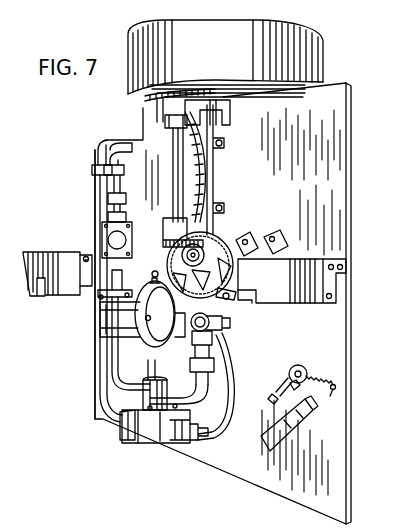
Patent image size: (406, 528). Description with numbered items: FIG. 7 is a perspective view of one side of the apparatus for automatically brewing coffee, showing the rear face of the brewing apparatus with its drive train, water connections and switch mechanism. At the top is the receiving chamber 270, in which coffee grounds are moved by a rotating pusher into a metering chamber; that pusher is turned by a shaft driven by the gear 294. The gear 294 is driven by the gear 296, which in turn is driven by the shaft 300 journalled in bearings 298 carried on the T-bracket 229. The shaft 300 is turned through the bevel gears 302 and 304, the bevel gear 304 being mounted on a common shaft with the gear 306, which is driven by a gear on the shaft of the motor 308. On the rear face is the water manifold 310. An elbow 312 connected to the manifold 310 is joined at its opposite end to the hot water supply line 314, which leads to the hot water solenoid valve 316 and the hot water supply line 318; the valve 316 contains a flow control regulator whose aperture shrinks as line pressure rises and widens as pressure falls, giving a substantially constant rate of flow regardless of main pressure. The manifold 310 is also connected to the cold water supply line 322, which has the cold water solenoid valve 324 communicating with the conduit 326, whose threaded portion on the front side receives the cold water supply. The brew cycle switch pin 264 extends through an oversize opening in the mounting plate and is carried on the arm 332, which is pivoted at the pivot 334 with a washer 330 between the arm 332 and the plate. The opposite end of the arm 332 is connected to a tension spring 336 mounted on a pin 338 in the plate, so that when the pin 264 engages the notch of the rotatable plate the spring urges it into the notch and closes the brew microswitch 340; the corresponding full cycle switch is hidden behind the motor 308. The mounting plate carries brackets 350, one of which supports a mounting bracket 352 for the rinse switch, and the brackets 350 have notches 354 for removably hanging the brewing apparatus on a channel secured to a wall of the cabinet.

The receiving chamber 270 is at (236, 48).
The gear 294 is at (224, 112).
The gear 296 is at (143, 113).
The bearings 298 is at (165, 128).
The shaft 300 is at (173, 166).
The T-bracket 229 is at (202, 178).
The conduit 326 is at (110, 198).
The cold water solenoid valve 324 is at (104, 248).
The brackets 350 is at (50, 254).
The notches 354 is at (40, 294).
The bevel gear 302 is at (150, 282).
The bevel gear 304 is at (234, 238).
The mounting bracket 352 is at (270, 240).
The gear 306 is at (225, 298).
The elbow 312 is at (230, 323).
The water manifold 310 is at (214, 340).
The hot water supply line 314 is at (228, 370).
The motor 308 is at (147, 369).
The hot water solenoid valve 316 is at (153, 449).
The cold water supply line 322 is at (211, 432).
The hot water supply line 318 is at (99, 370).
The pivot 334 is at (300, 370).
The arm 332 is at (300, 372).
The tension spring 336 is at (318, 369).
The washer 330 is at (282, 381).
The brew cycle switch pin 264 is at (269, 401).
The pin 338 is at (333, 392).
The brew microswitch 340 is at (297, 436).